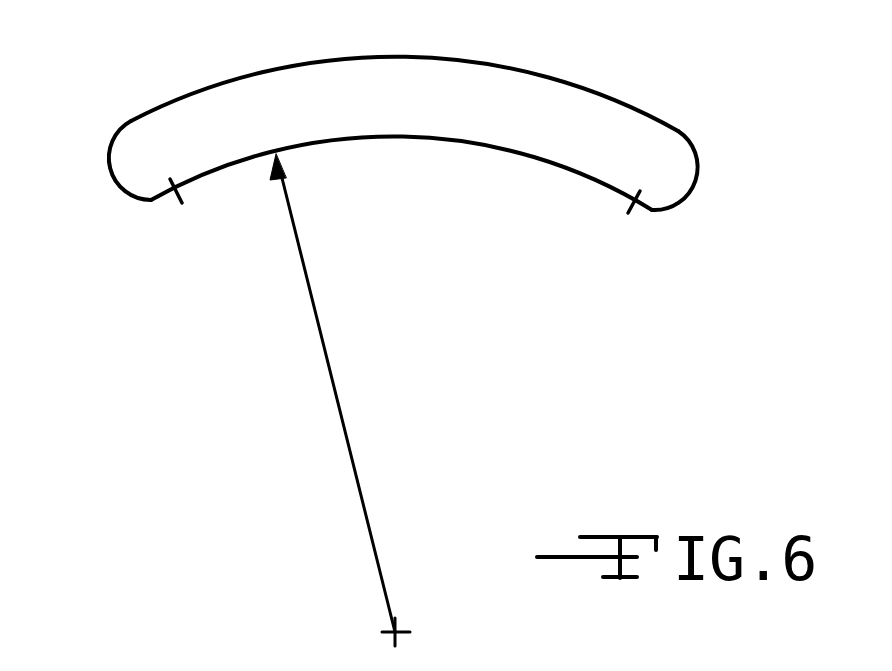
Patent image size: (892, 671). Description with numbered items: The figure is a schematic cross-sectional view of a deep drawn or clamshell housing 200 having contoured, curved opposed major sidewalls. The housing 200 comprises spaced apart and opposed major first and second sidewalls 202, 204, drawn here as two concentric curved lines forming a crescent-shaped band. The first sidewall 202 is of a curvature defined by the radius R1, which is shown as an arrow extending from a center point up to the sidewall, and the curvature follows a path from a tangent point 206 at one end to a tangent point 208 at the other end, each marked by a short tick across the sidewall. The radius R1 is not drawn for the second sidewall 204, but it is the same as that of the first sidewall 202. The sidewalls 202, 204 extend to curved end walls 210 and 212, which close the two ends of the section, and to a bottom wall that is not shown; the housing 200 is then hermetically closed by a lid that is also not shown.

The housing 200 is at (417, 153).
The first sidewall 202 is at (440, 141).
The second sidewall 204 is at (469, 61).
The tangent point 206 is at (163, 198).
The tangent point 208 is at (633, 213).
The curved end wall 210 is at (694, 184).
The curved end wall 212 is at (114, 176).
The radius R1 is at (323, 348).